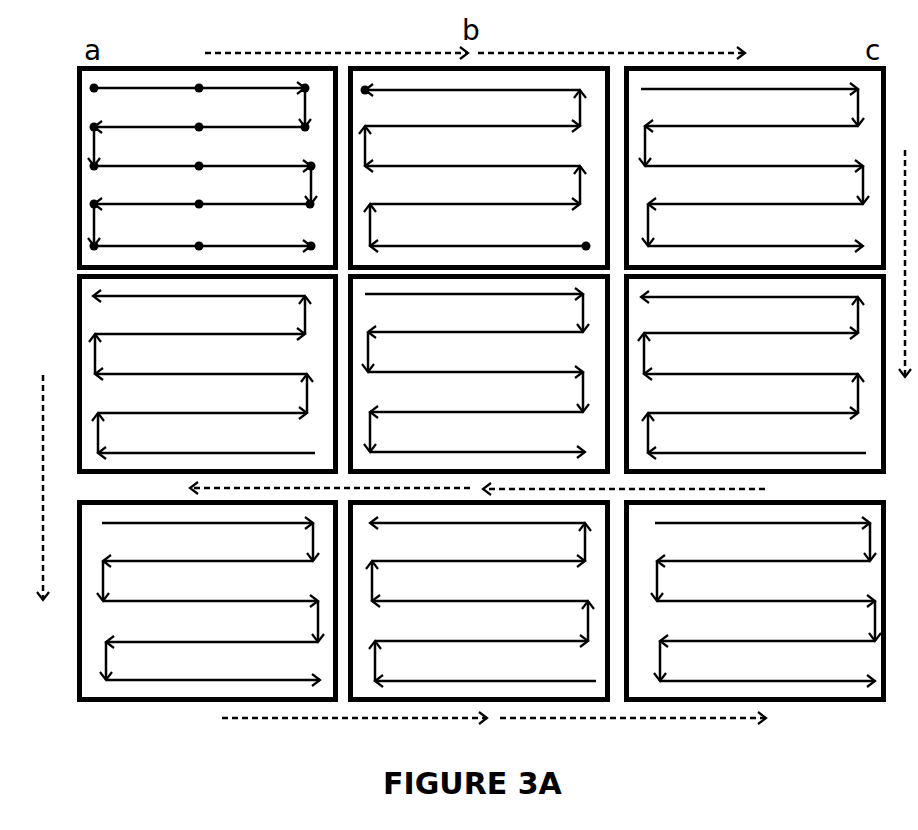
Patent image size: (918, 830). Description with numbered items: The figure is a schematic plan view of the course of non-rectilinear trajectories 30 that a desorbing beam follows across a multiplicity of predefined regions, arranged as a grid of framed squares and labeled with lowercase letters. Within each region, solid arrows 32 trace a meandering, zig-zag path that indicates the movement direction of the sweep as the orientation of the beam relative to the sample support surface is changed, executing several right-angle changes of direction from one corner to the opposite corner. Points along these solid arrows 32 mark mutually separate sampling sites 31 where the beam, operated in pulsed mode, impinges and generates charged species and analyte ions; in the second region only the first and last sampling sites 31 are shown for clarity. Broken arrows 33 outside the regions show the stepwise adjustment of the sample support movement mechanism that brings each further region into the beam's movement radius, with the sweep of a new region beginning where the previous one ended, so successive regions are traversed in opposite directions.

The non-rectilinear trajectories 30 is at (125, 333).
The sampling sites 31 is at (91, 90).
The solid arrows 32 is at (476, 168).
The broken arrows 33 is at (475, 39).